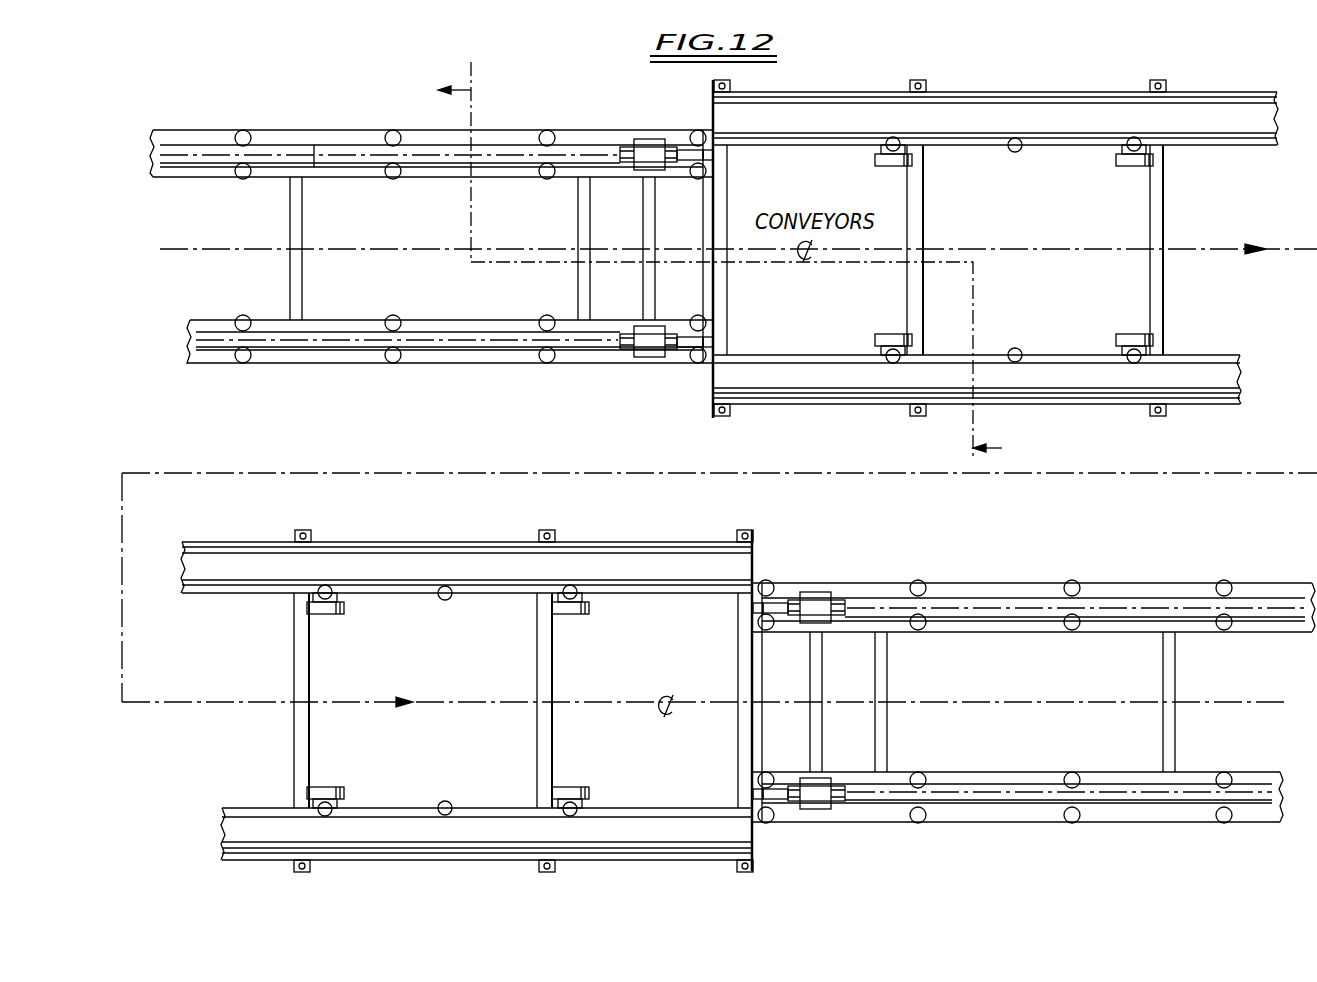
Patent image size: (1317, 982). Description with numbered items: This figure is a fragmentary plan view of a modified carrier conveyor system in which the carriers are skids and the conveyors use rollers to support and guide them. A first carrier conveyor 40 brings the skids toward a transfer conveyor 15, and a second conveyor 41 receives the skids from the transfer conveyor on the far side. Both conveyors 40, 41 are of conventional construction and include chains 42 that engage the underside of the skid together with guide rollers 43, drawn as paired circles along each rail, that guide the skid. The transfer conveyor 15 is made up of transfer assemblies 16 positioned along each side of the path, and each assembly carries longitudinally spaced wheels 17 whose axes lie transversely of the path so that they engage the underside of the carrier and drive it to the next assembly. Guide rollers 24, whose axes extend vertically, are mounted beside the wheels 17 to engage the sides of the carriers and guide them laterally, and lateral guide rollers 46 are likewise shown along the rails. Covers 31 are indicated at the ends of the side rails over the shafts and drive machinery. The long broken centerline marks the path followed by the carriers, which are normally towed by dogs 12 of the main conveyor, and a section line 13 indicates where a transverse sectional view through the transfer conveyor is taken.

The dog 12 is at (1013, 246).
The section line 13- 13 is at (724, 260).
The transfer conveyor 15 is at (1041, 93).
The transfer assembly 16 is at (852, 99).
The wheels 17 is at (879, 162).
The guide rollers 24 is at (898, 140).
The mounting bracket 31 is at (1224, 99).
The first carrier conveyor 40 is at (590, 133).
The second conveyor 41 is at (1031, 584).
The chains 42 is at (320, 160).
The guide rollers 43 is at (393, 130).
The lateral guide rollers 46 is at (1014, 153).